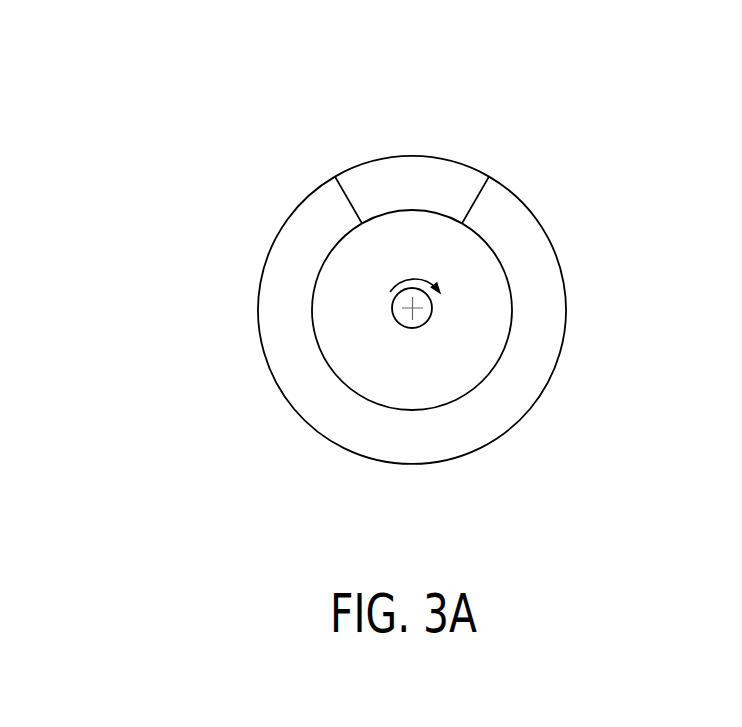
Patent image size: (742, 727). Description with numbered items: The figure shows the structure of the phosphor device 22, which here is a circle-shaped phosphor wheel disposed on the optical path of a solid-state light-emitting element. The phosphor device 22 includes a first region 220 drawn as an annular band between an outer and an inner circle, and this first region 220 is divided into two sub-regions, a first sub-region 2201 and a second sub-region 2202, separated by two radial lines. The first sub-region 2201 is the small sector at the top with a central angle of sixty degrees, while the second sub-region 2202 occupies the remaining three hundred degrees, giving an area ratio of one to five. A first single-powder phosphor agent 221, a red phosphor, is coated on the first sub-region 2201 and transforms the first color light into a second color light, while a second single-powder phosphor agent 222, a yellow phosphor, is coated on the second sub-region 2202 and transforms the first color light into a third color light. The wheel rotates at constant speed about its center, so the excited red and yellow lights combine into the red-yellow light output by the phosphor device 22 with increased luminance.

The phosphor device 22 is at (479, 248).
The first region 220 is at (494, 248).
The first sub-region 2201 is at (427, 153).
The second sub-region 2202 is at (517, 192).
The first single-powder phosphor agent 221 is at (412, 195).
The second single-powder phosphor agent 222 is at (412, 337).